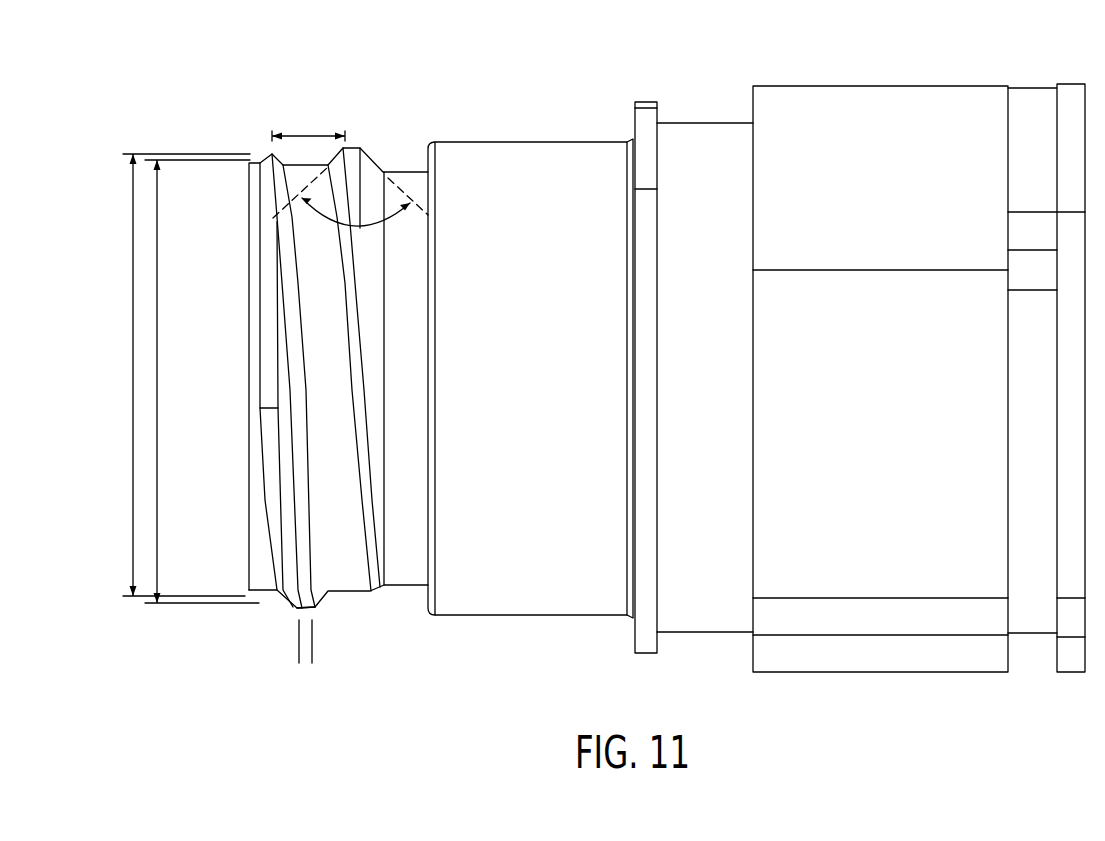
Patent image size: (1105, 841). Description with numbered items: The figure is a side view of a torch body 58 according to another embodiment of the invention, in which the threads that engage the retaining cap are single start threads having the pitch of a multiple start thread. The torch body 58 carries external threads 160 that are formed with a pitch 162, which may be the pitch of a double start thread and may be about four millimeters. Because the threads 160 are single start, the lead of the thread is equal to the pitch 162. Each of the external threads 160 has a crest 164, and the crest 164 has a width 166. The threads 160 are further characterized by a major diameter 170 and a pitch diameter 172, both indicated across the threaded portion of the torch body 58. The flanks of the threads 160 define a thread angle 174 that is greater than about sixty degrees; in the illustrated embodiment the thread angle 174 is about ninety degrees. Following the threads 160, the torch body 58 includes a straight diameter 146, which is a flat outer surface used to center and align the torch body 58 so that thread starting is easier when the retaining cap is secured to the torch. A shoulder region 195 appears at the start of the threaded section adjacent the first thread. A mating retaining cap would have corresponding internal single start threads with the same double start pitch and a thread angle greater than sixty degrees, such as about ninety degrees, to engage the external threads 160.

The torch body 58 is at (932, 52).
The straight diameter 146 is at (530, 140).
The external threads 160 is at (266, 156).
The pitch 162 is at (308, 133).
The crest 164 is at (297, 609).
The width 166 is at (312, 655).
The major diameter 170 is at (132, 377).
The pitch diameter 172 is at (158, 378).
The thread angle 174 is at (372, 228).
The shoulder 195 is at (253, 158).